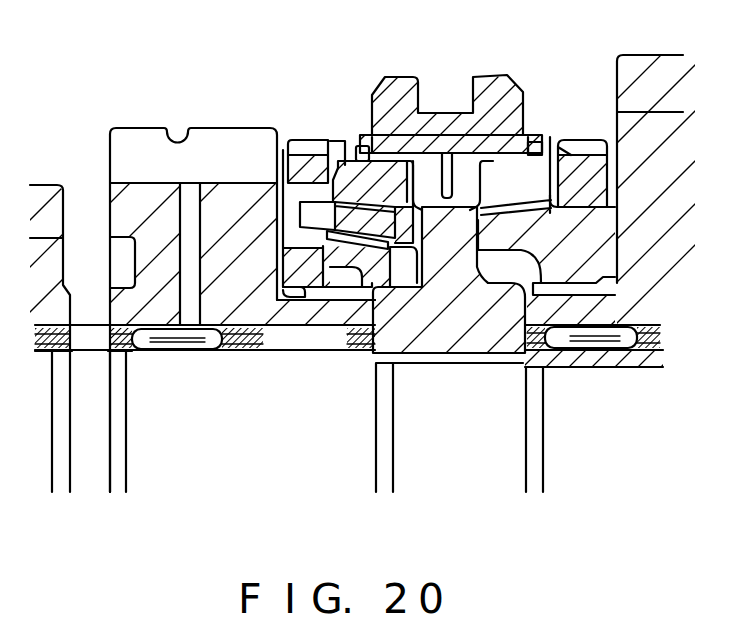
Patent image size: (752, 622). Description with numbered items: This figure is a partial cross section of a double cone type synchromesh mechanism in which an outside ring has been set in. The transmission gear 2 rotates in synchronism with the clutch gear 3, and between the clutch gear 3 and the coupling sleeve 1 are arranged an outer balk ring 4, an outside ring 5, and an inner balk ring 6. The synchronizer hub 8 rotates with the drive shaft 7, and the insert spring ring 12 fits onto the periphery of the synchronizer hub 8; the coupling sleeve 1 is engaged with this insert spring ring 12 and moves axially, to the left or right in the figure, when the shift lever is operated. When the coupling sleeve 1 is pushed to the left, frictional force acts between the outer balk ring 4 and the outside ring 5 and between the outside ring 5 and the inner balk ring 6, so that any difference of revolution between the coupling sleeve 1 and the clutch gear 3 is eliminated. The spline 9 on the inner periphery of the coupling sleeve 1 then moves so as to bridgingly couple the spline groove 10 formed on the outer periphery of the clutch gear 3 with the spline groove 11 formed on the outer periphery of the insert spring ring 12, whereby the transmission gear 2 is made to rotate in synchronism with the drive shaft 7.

The coupling sleeve 1 is at (404, 80).
The transmission gear 2 is at (150, 143).
The clutch gear 3 is at (297, 170).
The outer balk ring 4 is at (355, 177).
The outside ring 5 is at (345, 213).
The inner balk ring 6 is at (377, 252).
The drive shaft 7 is at (633, 408).
The synchronizer hub 8 is at (473, 343).
The spline 9 is at (449, 138).
The spline groove 10 is at (310, 145).
The spline groove 11 is at (413, 153).
The insert spring ring 12 is at (500, 135).